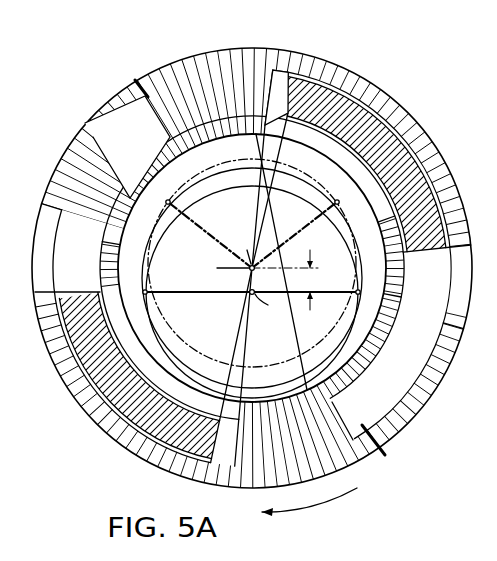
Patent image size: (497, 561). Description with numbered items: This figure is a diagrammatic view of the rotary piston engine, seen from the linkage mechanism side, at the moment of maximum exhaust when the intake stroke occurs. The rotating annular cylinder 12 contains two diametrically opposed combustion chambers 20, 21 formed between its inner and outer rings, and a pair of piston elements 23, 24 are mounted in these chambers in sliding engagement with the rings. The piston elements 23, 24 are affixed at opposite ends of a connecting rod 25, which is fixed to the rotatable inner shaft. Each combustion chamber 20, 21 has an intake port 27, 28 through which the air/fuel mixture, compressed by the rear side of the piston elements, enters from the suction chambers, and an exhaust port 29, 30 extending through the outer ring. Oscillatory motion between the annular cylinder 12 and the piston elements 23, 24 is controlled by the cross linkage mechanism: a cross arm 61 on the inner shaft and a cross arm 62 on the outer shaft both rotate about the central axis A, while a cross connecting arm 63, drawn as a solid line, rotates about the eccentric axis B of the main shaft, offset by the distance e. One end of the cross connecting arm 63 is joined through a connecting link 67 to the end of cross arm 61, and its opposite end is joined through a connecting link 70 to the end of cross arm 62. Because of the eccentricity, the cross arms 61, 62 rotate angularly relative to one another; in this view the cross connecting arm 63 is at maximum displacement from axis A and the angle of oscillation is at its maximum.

The annular cylinder 12 is at (258, 68).
The combustion chamber 20 is at (73, 218).
The combustion chamber 21 is at (367, 405).
The piston element 23 is at (120, 375).
The piston element 24 is at (384, 134).
The connecting rod 25 is at (222, 88).
The intake port 27 is at (73, 372).
The intake port 28 is at (450, 216).
The exhaust port 29 is at (52, 296).
The exhaust port 30 is at (461, 308).
The cross arm 61 is at (136, 90).
The cross arm 62 is at (426, 158).
The cross connecting arm 63 is at (199, 293).
The connecting link 67 is at (167, 201).
The connecting link 70 is at (410, 188).